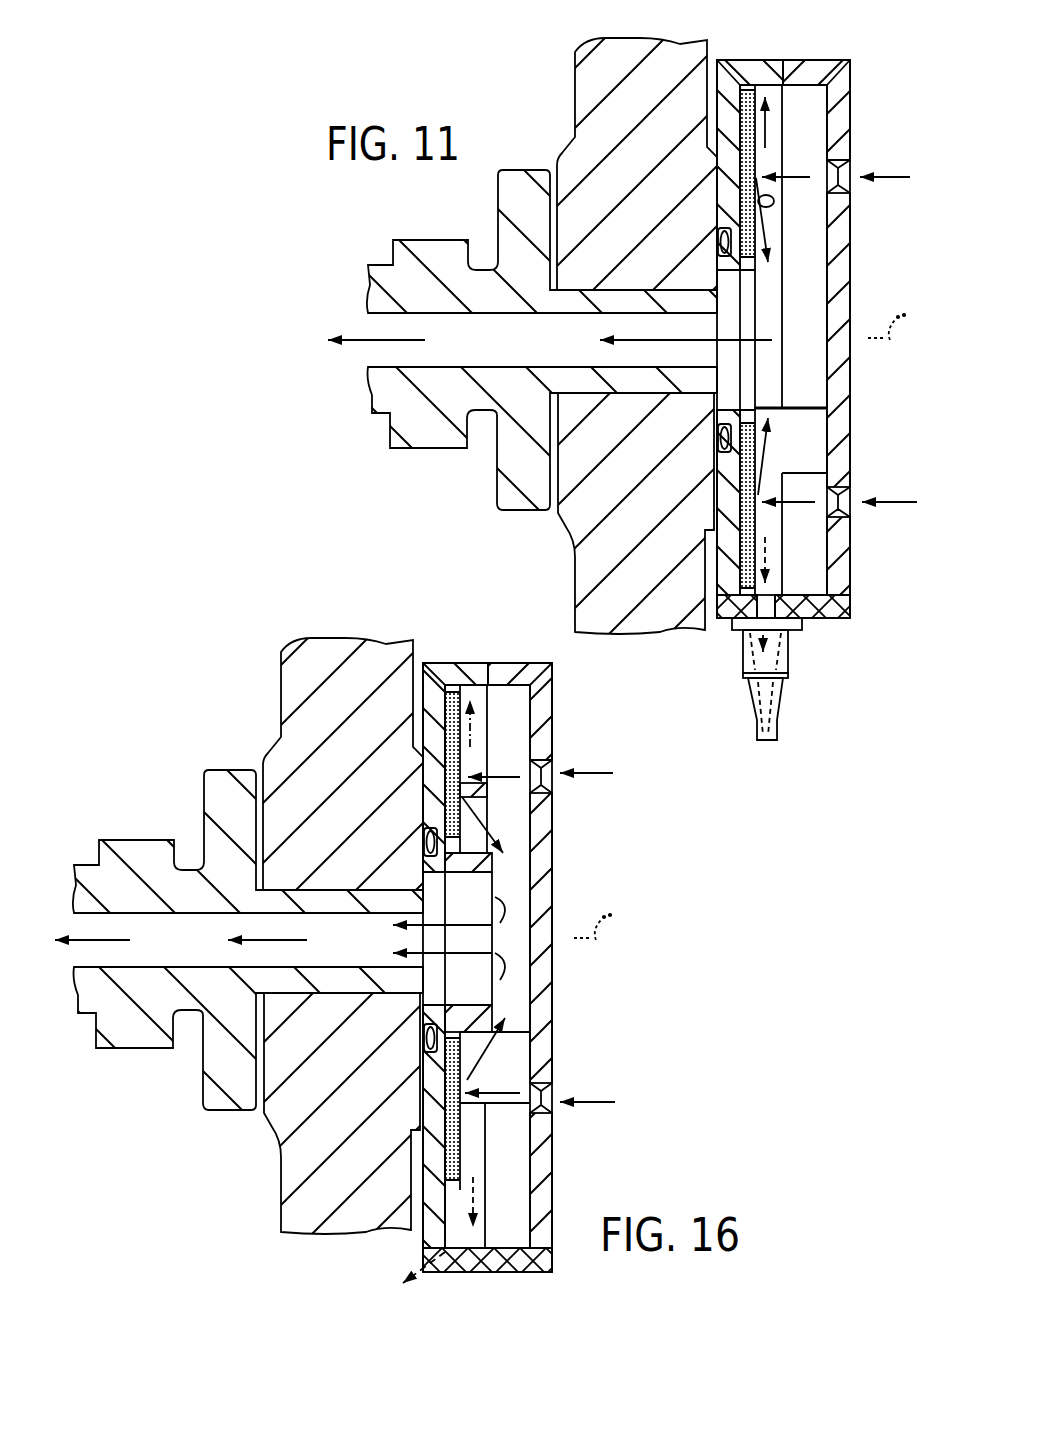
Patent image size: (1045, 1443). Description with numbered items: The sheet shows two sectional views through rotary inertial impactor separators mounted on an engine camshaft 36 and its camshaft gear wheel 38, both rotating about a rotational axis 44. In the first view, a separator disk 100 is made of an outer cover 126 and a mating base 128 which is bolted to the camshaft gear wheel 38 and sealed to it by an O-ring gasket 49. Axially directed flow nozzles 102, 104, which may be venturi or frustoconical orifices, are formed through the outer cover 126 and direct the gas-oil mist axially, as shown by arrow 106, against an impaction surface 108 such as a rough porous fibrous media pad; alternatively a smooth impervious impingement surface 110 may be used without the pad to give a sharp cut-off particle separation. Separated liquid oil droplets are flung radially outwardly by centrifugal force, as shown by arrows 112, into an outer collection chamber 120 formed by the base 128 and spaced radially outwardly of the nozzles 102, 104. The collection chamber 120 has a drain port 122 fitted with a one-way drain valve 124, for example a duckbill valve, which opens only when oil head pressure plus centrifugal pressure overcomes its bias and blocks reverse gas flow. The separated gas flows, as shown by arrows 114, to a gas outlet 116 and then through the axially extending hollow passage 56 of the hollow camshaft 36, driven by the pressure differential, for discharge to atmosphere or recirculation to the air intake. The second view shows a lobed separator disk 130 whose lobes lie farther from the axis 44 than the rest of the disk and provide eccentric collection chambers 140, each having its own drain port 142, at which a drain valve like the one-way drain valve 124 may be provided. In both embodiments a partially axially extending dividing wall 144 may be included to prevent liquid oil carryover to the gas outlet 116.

In FIG. 11, the camshaft 36 is at (427, 238).
In FIG. 16, the camshaft 36 is at (248, 940).
In FIG. 11, the camshaft gear wheel 38 is at (590, 66).
In FIG. 16, the camshaft gear wheel 38 is at (325, 936).
In FIG. 11, the rotational axis 44 is at (902, 323).
In FIG. 16, the rotational axis 44 is at (609, 924).
In FIG. 11, the O-ring gasket 49 is at (717, 232).
In FIG. 16, the O-ring gasket 49 is at (402, 840).
In FIG. 11, the axially extending hollow passage 56 is at (372, 356).
In FIG. 16, the axially extending hollow passage 56 is at (270, 959).
In FIG. 11, the separator disk 100 is at (850, 262).
In FIG. 11, the flow nozzle 102 is at (843, 163).
In FIG. 16, the flow nozzle 102 is at (543, 766).
In FIG. 11, the flow nozzle 104 is at (840, 493).
In FIG. 16, the flow nozzle 104 is at (547, 1090).
In FIG. 11, the arrow 106 is at (792, 178).
In FIG. 16, the arrow 106 is at (498, 782).
In FIG. 11, the impaction surface 108 is at (762, 153).
In FIG. 16, the impaction surface 108 is at (462, 775).
In FIG. 11, the smooth impervious impingement surface 110 is at (740, 127).
In FIG. 11, the arrows 112 is at (778, 125).
In FIG. 16, the arrows 112 is at (475, 700).
In FIG. 11, the arrows 114 is at (760, 207).
In FIG. 16, the arrows 114 is at (505, 850).
In FIG. 11, the gas outlet 116 is at (728, 383).
In FIG. 16, the gas outlet 116 is at (396, 1036).
In FIG. 11, the outer collection chamber 120 is at (805, 597).
In FIG. 11, the drain port 122 is at (727, 622).
In FIG. 11, the one-way drain valve 124 is at (782, 698).
In FIG. 11, the outer cover 126 is at (827, 62).
In FIG. 16, the outer cover 126 is at (518, 663).
In FIG. 11, the mating base 128 is at (747, 60).
In FIG. 16, the mating base 128 is at (455, 663).
In FIG. 16, the separator disk 130 is at (552, 848).
In FIG. 16, the eccentric collection chamber 140 is at (488, 1262).
In FIG. 16, the drain port 142 is at (437, 1272).
In FIG. 16, the dividing wall 144 is at (463, 1007).